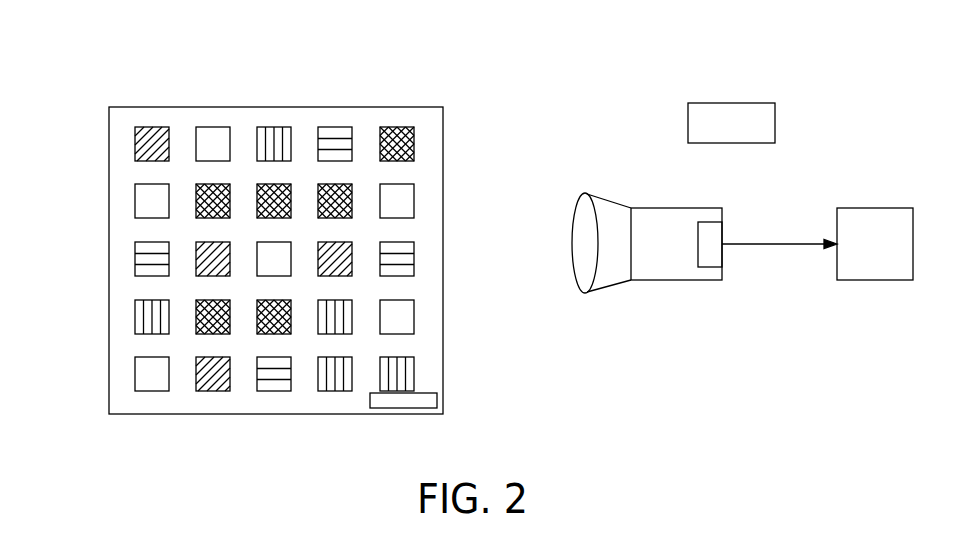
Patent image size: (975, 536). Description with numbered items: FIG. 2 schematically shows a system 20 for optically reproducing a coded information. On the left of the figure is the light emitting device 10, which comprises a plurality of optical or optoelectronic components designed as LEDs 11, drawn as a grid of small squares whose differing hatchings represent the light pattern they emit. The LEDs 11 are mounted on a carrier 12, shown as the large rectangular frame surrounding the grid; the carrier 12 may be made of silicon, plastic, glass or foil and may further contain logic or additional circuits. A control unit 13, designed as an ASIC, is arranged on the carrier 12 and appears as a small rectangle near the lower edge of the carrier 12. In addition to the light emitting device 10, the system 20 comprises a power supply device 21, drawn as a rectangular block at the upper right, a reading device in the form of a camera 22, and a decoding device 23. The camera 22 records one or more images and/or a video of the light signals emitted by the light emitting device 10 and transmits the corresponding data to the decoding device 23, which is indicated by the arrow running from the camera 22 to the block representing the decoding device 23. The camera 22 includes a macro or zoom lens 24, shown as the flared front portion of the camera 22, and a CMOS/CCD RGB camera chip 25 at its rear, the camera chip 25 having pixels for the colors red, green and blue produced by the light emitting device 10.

The light emitting device 10 is at (105, 78).
The LEDs 11 is at (263, 127).
The carrier 12 is at (109, 258).
The control unit 13 is at (437, 400).
The system 20 is at (383, 46).
The power supply device 21 is at (716, 103).
The camera 22 is at (617, 168).
The decoding device 23 is at (862, 208).
The lens 24 is at (587, 293).
The camera chip 25 is at (710, 267).